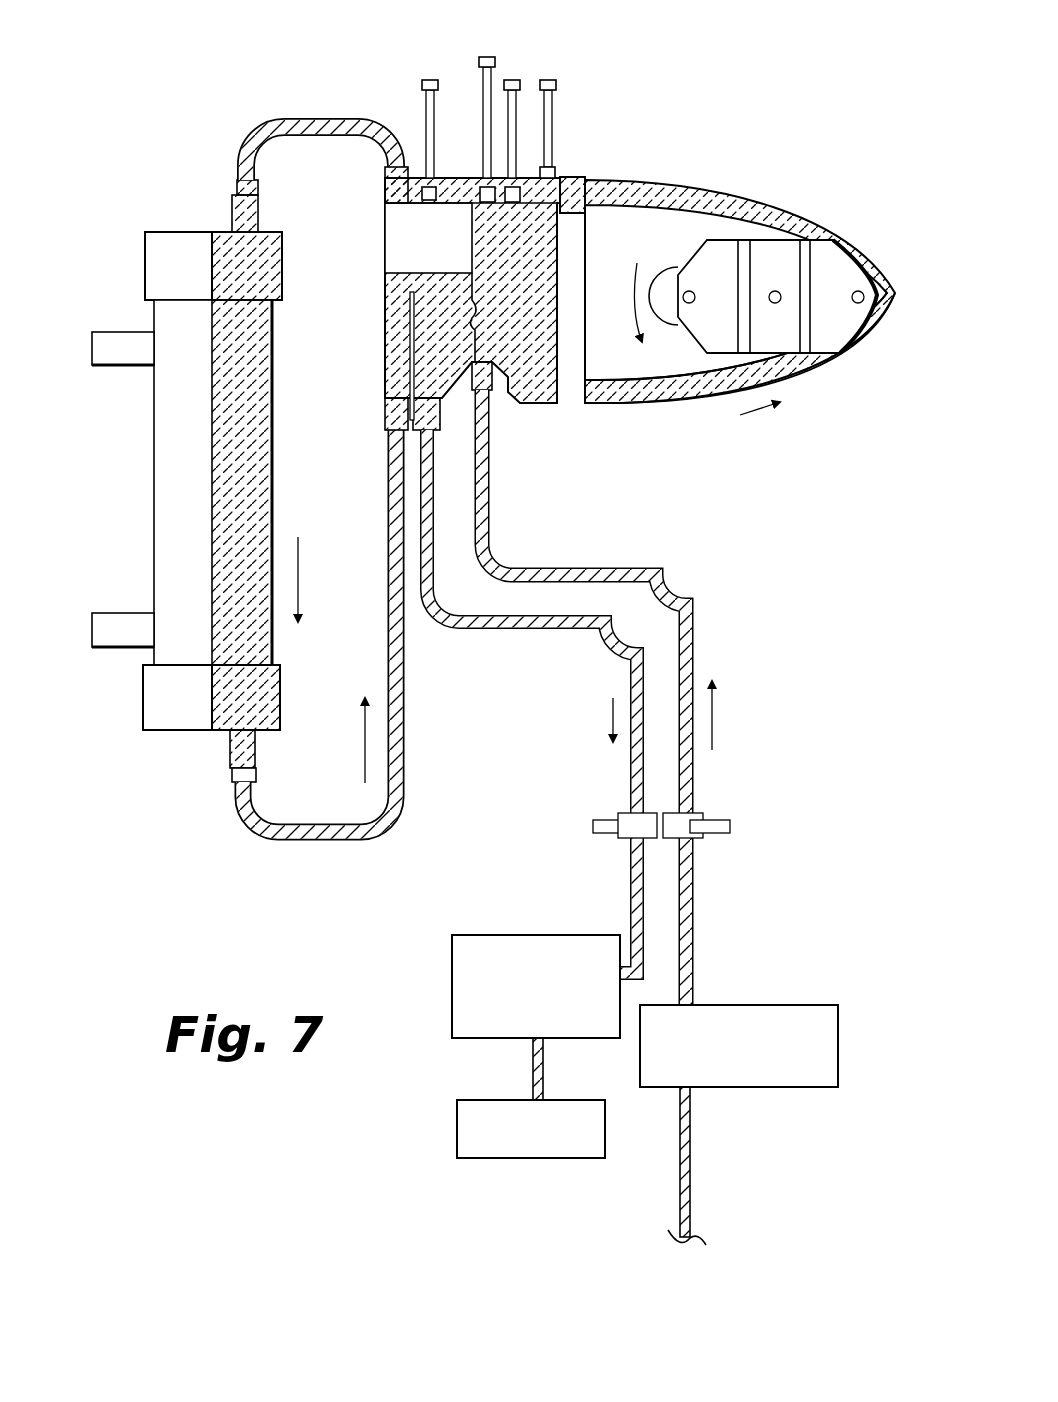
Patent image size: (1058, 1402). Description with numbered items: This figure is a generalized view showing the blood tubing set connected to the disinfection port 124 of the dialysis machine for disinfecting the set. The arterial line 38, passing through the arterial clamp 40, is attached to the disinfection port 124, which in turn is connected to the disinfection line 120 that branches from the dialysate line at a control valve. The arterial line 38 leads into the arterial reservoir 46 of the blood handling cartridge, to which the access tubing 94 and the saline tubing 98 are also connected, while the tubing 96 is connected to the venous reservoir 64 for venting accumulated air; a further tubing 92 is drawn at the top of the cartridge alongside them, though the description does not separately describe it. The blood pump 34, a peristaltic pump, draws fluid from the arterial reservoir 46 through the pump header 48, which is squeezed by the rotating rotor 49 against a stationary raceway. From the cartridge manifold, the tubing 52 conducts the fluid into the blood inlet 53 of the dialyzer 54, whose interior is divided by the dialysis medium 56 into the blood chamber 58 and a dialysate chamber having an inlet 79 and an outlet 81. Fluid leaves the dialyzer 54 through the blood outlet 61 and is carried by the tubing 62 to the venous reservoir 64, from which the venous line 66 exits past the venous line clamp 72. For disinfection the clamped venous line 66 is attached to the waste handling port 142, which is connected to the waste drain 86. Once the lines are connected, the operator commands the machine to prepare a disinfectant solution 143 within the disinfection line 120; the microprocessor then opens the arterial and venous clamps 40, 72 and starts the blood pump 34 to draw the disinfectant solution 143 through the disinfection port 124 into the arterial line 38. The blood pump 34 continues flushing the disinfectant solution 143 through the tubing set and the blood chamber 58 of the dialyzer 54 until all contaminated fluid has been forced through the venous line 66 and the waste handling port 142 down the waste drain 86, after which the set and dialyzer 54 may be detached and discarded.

The blood pump 34 is at (845, 362).
The arterial line 38 is at (623, 567).
The arterial clamp 40 is at (730, 830).
The arterial reservoir 46 is at (540, 300).
The pump header 48 is at (677, 390).
The rotor 49 is at (840, 267).
The tubing 52 is at (267, 120).
The blood inlet 53 is at (232, 213).
The dialyzer 54 is at (272, 470).
The dialysis medium 56 is at (212, 490).
The blood chamber 58 is at (243, 397).
The blood outlet 61 is at (257, 753).
The tubing 62 is at (293, 840).
The venous reservoir 64 is at (437, 315).
The venous line 66 is at (567, 631).
The venous line clamp 72 is at (603, 833).
The inlet 79 is at (123, 615).
The outlet 81 is at (133, 367).
The waste drain 86 is at (475, 1122).
The bolt 92 is at (557, 138).
The tubing 94 is at (523, 83).
The tubing 96 is at (430, 105).
The saline tubing 98 is at (483, 105).
The disinfection line 120 is at (688, 1100).
The disinfection port 124 is at (740, 1005).
The waste handling port 142 is at (452, 1005).
The disinfectant solution 143 is at (480, 487).